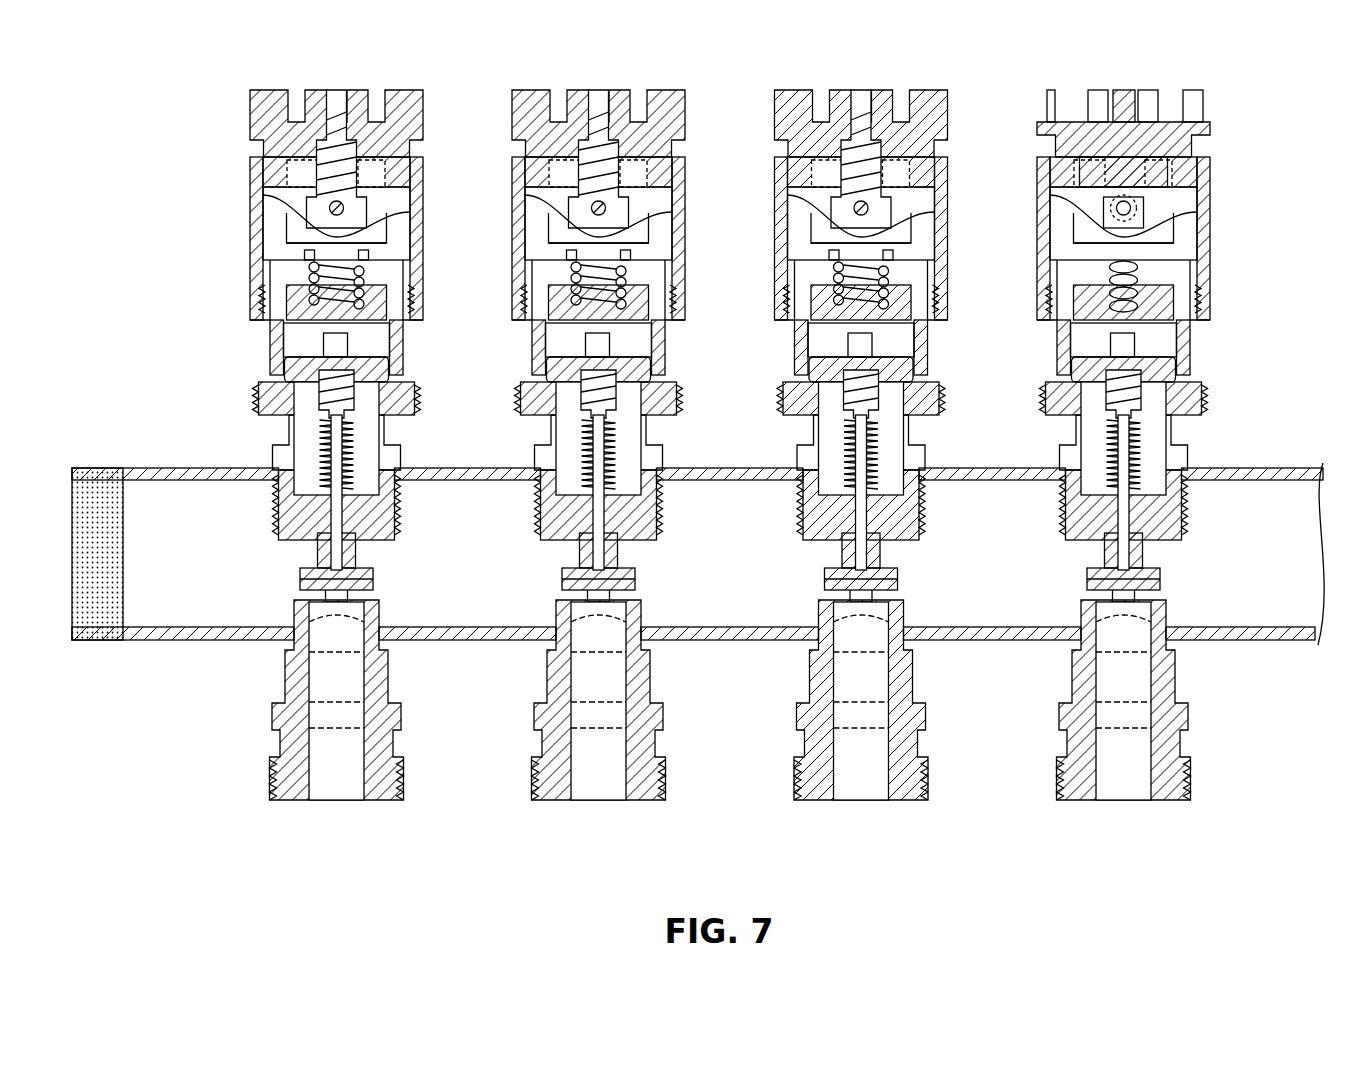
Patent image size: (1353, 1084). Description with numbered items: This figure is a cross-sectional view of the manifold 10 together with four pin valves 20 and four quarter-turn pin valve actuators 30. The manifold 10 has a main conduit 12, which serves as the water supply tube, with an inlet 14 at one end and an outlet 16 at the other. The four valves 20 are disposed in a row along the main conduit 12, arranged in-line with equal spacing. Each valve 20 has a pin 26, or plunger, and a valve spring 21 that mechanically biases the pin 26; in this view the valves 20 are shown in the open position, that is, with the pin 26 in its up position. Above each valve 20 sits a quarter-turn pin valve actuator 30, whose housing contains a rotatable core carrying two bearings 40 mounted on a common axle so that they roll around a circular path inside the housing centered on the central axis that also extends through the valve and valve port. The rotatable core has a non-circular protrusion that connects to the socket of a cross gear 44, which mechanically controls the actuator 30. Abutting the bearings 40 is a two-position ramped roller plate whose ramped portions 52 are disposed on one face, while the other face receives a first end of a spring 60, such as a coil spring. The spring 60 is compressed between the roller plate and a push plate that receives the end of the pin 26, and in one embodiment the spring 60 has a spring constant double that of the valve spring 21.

The manifold 10 is at (698, 565).
The main conduit 12 is at (150, 497).
The inlet 14 is at (130, 585).
The outlet 16 is at (1255, 615).
The valve 20 is at (272, 452).
The valve spring 21 is at (352, 430).
The pin 26 is at (315, 560).
The quarter-turn pin valve actuator 30 is at (250, 240).
The bearings 40 is at (305, 202).
The cross gear 44 is at (425, 112).
The ramped portions 52 is at (385, 225).
The spring 60 is at (310, 268).